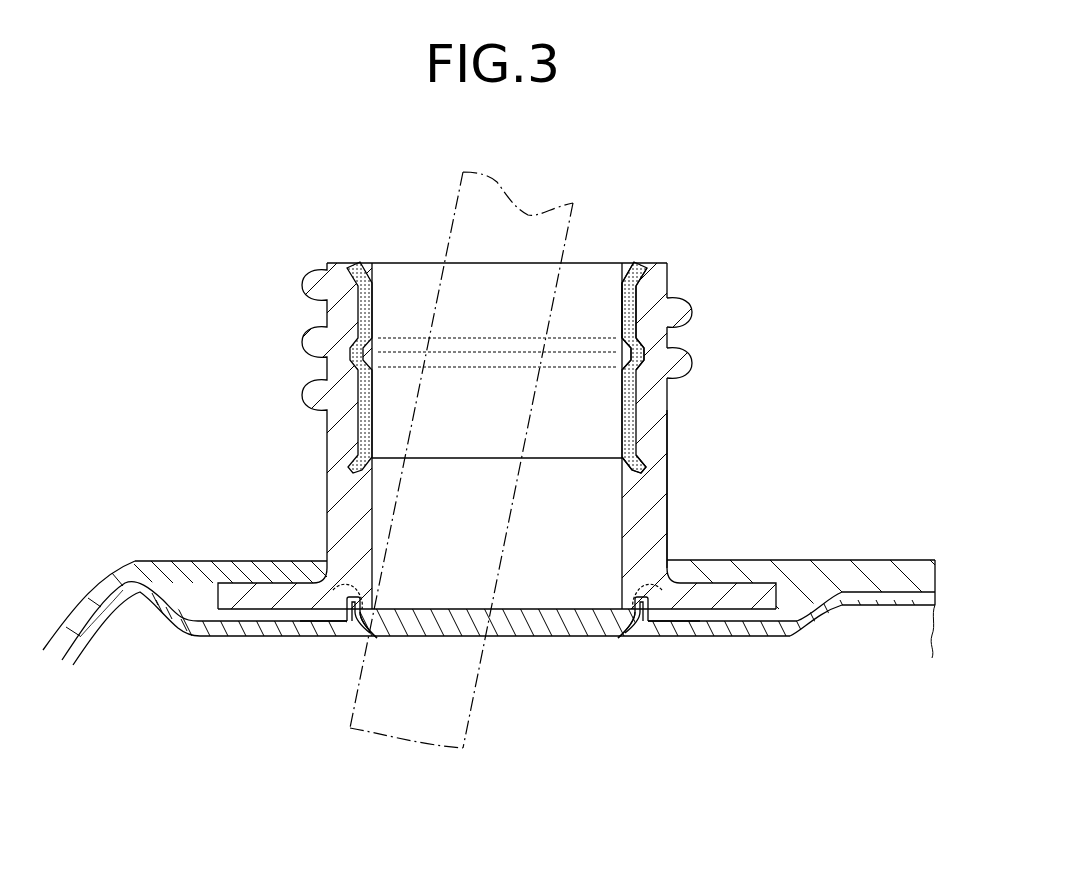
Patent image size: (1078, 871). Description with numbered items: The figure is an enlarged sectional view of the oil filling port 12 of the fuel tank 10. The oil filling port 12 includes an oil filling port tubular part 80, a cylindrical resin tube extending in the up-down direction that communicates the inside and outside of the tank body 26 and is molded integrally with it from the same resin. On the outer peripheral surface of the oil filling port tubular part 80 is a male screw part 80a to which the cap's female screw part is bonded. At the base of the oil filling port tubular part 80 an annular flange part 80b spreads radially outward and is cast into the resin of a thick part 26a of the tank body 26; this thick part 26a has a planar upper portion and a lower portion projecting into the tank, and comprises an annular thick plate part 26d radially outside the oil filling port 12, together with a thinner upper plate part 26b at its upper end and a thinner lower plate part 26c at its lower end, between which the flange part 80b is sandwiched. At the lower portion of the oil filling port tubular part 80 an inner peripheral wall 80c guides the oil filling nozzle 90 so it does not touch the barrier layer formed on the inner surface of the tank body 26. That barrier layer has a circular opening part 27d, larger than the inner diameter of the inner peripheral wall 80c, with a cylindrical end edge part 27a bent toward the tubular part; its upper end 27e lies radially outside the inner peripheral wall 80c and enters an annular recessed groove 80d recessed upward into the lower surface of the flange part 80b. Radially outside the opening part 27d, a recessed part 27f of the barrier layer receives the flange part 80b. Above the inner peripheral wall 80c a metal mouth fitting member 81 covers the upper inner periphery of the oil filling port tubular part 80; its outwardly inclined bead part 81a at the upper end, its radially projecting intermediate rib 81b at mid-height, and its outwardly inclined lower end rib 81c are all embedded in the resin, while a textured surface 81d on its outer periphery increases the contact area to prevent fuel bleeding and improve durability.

The fuel tank 10 is at (838, 230).
The oil filling port 12 is at (655, 252).
The tank body 26 is at (898, 572).
The thick part 26a is at (207, 558).
The upper plate part 26b is at (250, 578).
The lower plate part 26c is at (278, 630).
The thick plate part 26d is at (190, 563).
The end edge part 27a is at (367, 617).
The opening part 27d is at (353, 625).
The upper end 27e is at (372, 610).
The recessed part 27f is at (335, 621).
The oil filling port tubular part 80 is at (673, 282).
The male screw part 80a is at (692, 313).
The flange part 80b is at (270, 590).
The inner peripheral wall 80c is at (393, 517).
The recessed groove 80d is at (290, 611).
The mouth fitting member 81 is at (606, 263).
The bead part 81a is at (633, 263).
The intermediate rib 81b is at (655, 358).
The lower end rib 81c is at (648, 463).
The textured surface 81d is at (640, 283).
The oil filling nozzle 90 is at (452, 221).